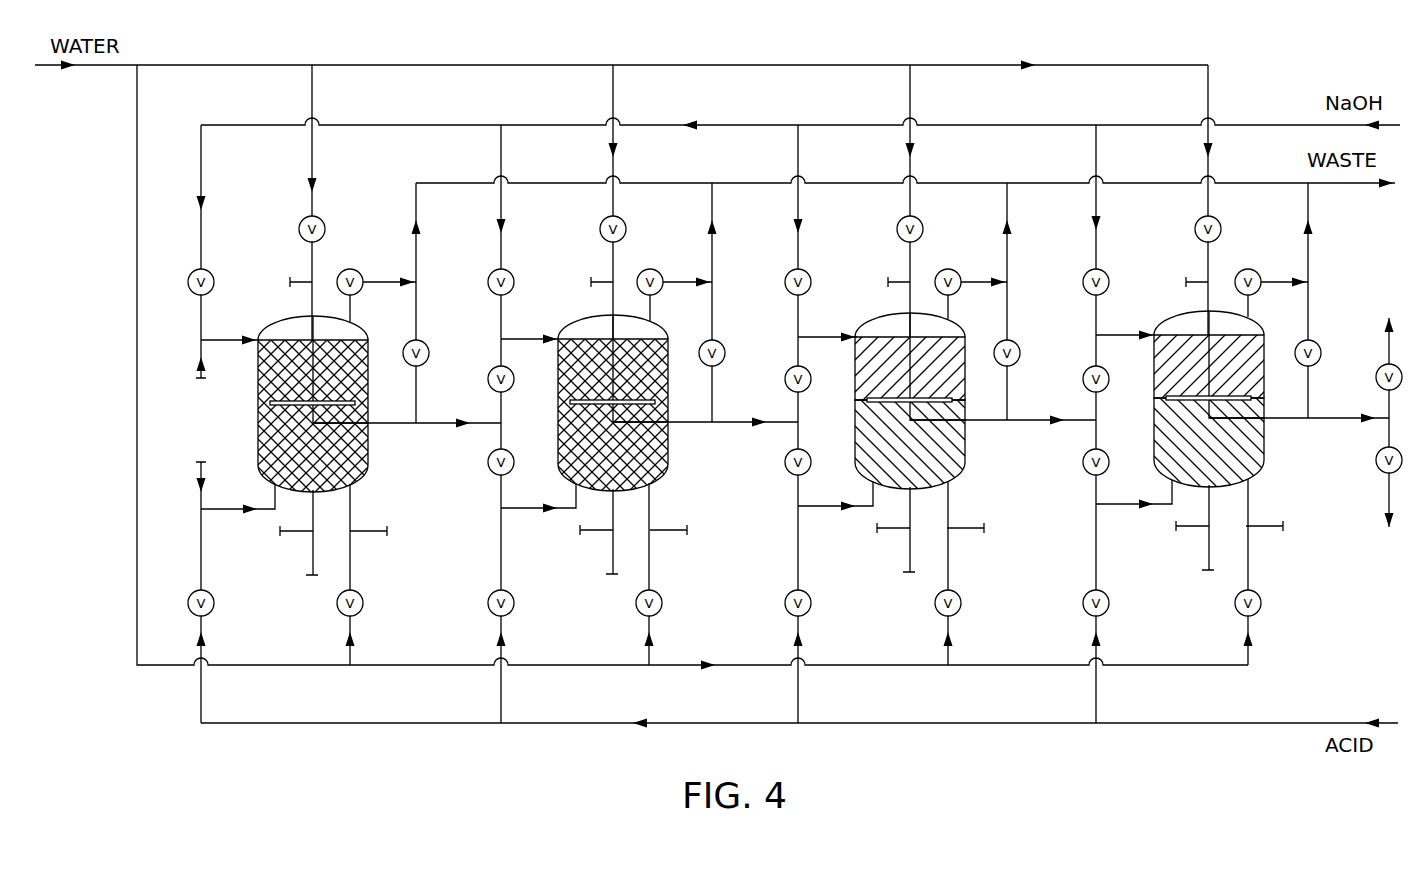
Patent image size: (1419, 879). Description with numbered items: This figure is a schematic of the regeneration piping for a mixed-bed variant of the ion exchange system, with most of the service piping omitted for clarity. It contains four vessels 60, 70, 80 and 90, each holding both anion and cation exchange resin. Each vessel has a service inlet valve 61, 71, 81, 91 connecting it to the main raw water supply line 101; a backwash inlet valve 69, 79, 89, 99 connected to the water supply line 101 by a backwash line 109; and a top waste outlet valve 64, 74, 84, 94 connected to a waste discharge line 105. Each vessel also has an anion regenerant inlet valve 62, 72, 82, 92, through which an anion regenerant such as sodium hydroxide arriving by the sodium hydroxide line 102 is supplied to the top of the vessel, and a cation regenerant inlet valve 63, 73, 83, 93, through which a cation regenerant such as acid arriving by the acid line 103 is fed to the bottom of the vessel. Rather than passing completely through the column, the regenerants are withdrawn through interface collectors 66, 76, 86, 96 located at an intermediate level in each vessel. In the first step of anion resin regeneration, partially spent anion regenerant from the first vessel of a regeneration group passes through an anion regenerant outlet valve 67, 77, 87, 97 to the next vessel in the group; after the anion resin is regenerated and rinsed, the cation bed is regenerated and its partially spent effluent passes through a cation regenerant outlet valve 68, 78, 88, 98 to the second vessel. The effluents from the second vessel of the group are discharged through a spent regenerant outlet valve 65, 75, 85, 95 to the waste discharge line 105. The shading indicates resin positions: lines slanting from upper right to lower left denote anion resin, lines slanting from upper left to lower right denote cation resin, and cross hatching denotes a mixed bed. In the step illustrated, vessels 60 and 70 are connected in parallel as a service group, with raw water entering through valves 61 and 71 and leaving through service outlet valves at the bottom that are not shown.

The vessel 60 is at (370, 478).
The service inlet valve 61 is at (301, 221).
The anion regenerant inlet valve 62 is at (210, 273).
The cation regenerant inlet valve 63 is at (191, 594).
The top waste outlet valve 64 is at (355, 270).
The spent regenerant outlet valve 65 is at (427, 346).
The interface collector 66 is at (303, 401).
The anion regenerant outlet valve 67 is at (488, 379).
The cation regenerant outlet valve 68 is at (488, 462).
The backwash inlet valve 69 is at (364, 606).
The vessel 70 is at (670, 478).
The service inlet valve 71 is at (602, 221).
The anion regenerant inlet valve 72 is at (510, 272).
The cation regenerant inlet valve 73 is at (490, 598).
The top waste outlet valve 74 is at (655, 270).
The spent regenerant outlet valve 75 is at (723, 346).
The interface collector 76 is at (604, 401).
The anion regenerant outlet valve 77 is at (785, 379).
The cation regenerant outlet valve 78 is at (785, 462).
The backwash inlet valve 79 is at (663, 605).
The vessel 80 is at (967, 478).
The service inlet valve 81 is at (899, 221).
The anion regenerant inlet valve 82 is at (808, 272).
The cation regenerant inlet valve 83 is at (788, 598).
The top waste outlet valve 84 is at (954, 270).
The spent regenerant outlet valve 85 is at (1018, 346).
The interface collector 86 is at (902, 399).
The anion regenerant outlet valve 87 is at (1083, 379).
The cation regenerant outlet valve 88 is at (1083, 462).
The backwash inlet valve 89 is at (962, 605).
The vessel 90 is at (1266, 478).
The service inlet valve 91 is at (1198, 221).
The anion regenerant inlet valve 92 is at (1106, 272).
The cation regenerant inlet valve 93 is at (1086, 598).
The top waste outlet valve 94 is at (1255, 270).
The spent regenerant outlet valve 95 is at (1320, 346).
The interface collector 96 is at (1202, 397).
The anion regenerant outlet valve 97 is at (1376, 378).
The cation regenerant outlet valve 98 is at (1376, 461).
The backwash inlet valve 99 is at (1262, 605).
The main raw water supply line 101 is at (444, 63).
The caustic supply line 102 is at (451, 124).
The acid supply line 103 is at (935, 724).
The waste discharge line 105 is at (451, 182).
The backwash line 109 is at (155, 668).